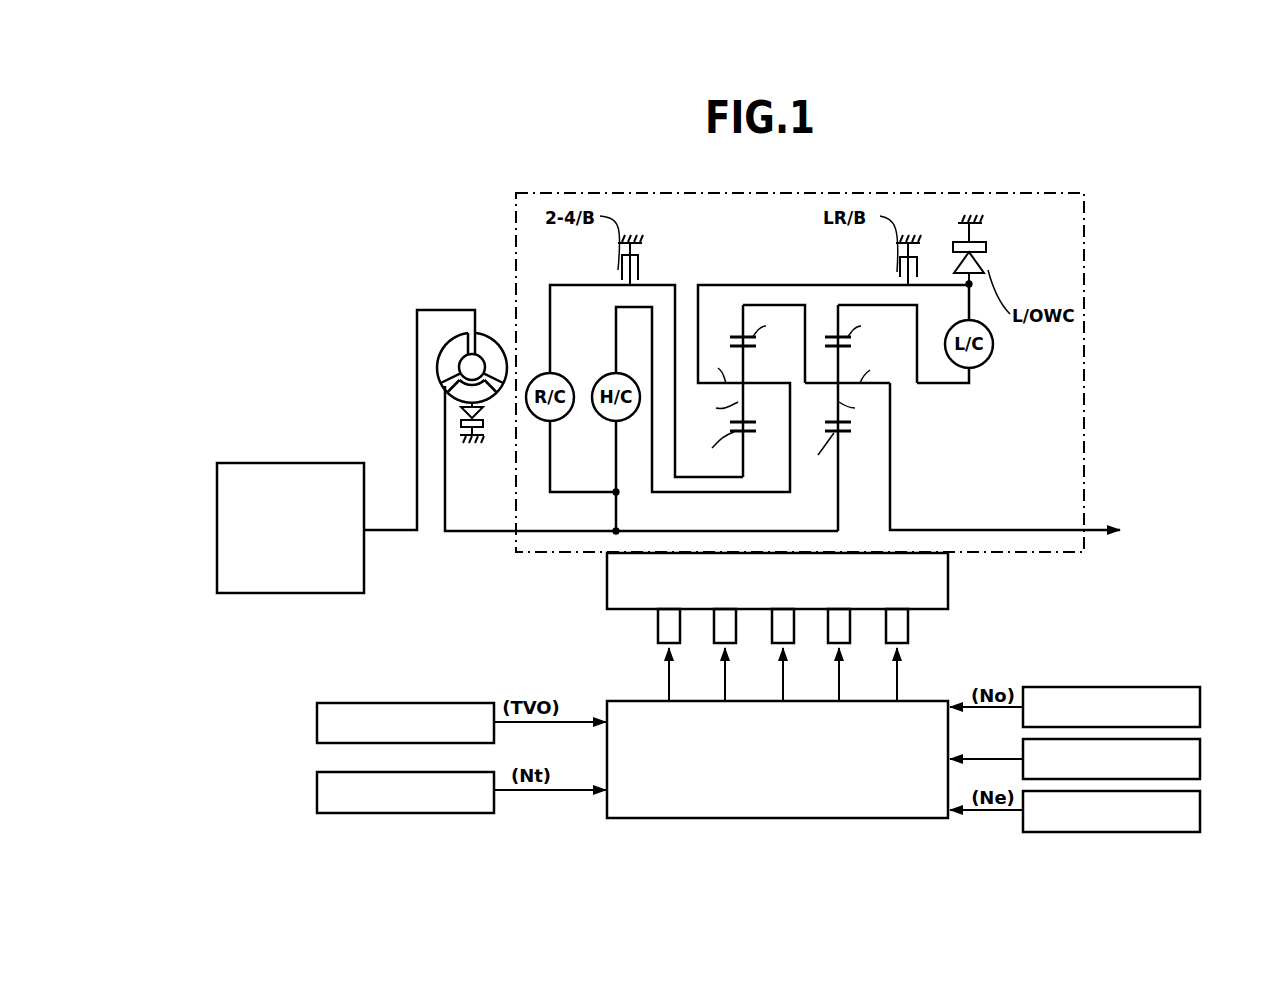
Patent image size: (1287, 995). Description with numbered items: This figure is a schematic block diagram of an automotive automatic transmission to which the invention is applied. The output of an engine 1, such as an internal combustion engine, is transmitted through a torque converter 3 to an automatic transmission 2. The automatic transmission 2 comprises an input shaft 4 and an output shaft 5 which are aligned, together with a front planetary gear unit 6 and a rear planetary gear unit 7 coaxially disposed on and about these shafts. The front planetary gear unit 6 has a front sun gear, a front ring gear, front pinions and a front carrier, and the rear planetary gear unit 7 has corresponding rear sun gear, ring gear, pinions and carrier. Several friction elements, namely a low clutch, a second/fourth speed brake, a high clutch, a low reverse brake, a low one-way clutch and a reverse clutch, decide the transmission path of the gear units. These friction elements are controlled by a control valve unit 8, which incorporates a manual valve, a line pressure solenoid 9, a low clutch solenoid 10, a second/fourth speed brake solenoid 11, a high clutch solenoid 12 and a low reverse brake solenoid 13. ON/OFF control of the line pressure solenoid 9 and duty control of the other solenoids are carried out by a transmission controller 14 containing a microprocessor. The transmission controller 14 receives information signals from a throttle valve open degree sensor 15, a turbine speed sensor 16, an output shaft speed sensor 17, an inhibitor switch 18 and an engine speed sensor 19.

The engine 1 is at (274, 463).
The automatic transmission 2 is at (1092, 242).
The torque converter 3 is at (490, 326).
The input shaft 4 is at (468, 534).
The output shaft 5 is at (954, 529).
The front planetary gear unit 6 is at (733, 303).
The rear planetary gear unit 7 is at (827, 303).
The control valve unit 8 is at (949, 585).
The line pressure solenoid 9 is at (657, 632).
The low clutch solenoid 10 is at (713, 632).
The second/fourth speed brake solenoid 11 is at (771, 632).
The high clutch solenoid 12 is at (827, 632).
The low reverse brake solenoid 13 is at (885, 632).
The transmission controller 14 is at (935, 701).
The throttle valve open degree sensor 15 is at (317, 720).
The turbine speed sensor 16 is at (317, 790).
The output shaft speed sensor 17 is at (1201, 707).
The inhibitor switch 18 is at (1201, 759).
The engine speed sensor 19 is at (1201, 811).